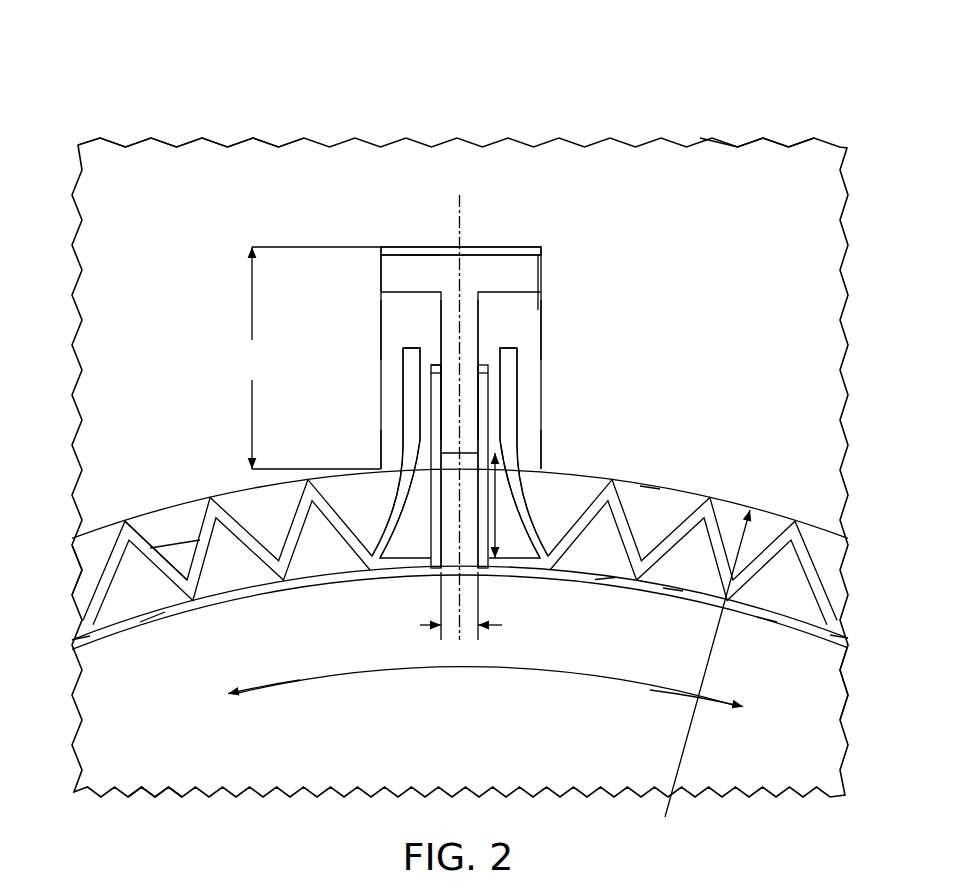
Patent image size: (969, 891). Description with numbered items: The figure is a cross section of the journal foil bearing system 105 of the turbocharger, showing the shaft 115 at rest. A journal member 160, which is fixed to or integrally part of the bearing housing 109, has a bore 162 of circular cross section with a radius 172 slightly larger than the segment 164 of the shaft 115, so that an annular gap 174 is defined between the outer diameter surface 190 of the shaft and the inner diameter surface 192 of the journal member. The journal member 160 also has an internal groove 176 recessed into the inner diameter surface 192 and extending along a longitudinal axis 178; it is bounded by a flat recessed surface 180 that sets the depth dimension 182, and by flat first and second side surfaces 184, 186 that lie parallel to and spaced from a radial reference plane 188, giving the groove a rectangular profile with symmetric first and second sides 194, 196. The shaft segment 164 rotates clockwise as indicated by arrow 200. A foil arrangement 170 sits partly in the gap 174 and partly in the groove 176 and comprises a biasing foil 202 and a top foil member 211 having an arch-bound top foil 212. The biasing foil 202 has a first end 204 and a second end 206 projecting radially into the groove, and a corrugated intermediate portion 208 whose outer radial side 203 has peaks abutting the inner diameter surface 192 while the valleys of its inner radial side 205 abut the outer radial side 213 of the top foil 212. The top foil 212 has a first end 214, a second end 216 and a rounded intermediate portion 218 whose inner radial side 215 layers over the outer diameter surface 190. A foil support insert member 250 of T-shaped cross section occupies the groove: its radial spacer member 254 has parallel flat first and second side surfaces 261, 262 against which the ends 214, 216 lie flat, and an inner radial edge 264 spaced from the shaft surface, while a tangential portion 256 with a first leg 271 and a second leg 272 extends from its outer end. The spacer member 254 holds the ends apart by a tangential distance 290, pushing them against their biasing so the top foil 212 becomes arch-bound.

The bearing system 105 is at (140, 125).
The bearing housing 109 is at (783, 140).
The shaft 115 is at (787, 722).
The journal member 160 is at (145, 224).
The bore 162 is at (257, 510).
The segment of the shaft 164 is at (440, 771).
The foil arrangement 170 is at (70, 591).
The radius 172 is at (690, 745).
The annular gap 174 is at (157, 539).
The internal groove 176 is at (380, 312).
The longitudinal axis 178 is at (462, 350).
The recessed surface 180 is at (500, 249).
The depth dimension 182 is at (305, 358).
The first side surface 184 is at (388, 338).
The second side surface 186 is at (543, 340).
The radial reference plane 188 is at (462, 222).
The outer diameter surface 190 is at (767, 607).
The inner diameter surface 192 is at (650, 488).
The first side 194 is at (541, 470).
The second side 196 is at (380, 463).
The arrow 200 is at (485, 692).
The biasing foil 202 is at (803, 555).
The outer radial side 203 is at (200, 517).
The first end 204 is at (410, 385).
The inner radial side 205 is at (215, 563).
The second end 206 is at (510, 385).
The intermediate portion 208 is at (142, 521).
The top foil member 211 is at (77, 630).
The arch-bound top foil 212 is at (817, 623).
The outer radial side 213 is at (673, 573).
The first end 214 is at (430, 517).
The inner radial side 215 is at (605, 580).
The second end 216 is at (484, 517).
The intermediate portion 218 is at (152, 613).
The foil support insert member 250 is at (520, 262).
The spacer member 254 is at (445, 372).
The tangential portion 256 is at (417, 267).
The first side surface 261 is at (433, 405).
The second side surface 262 is at (486, 405).
The inner radial edge 264 is at (498, 538).
The first leg 271 is at (382, 273).
The second leg 272 is at (540, 308).
The tangential distance 290 is at (433, 606).